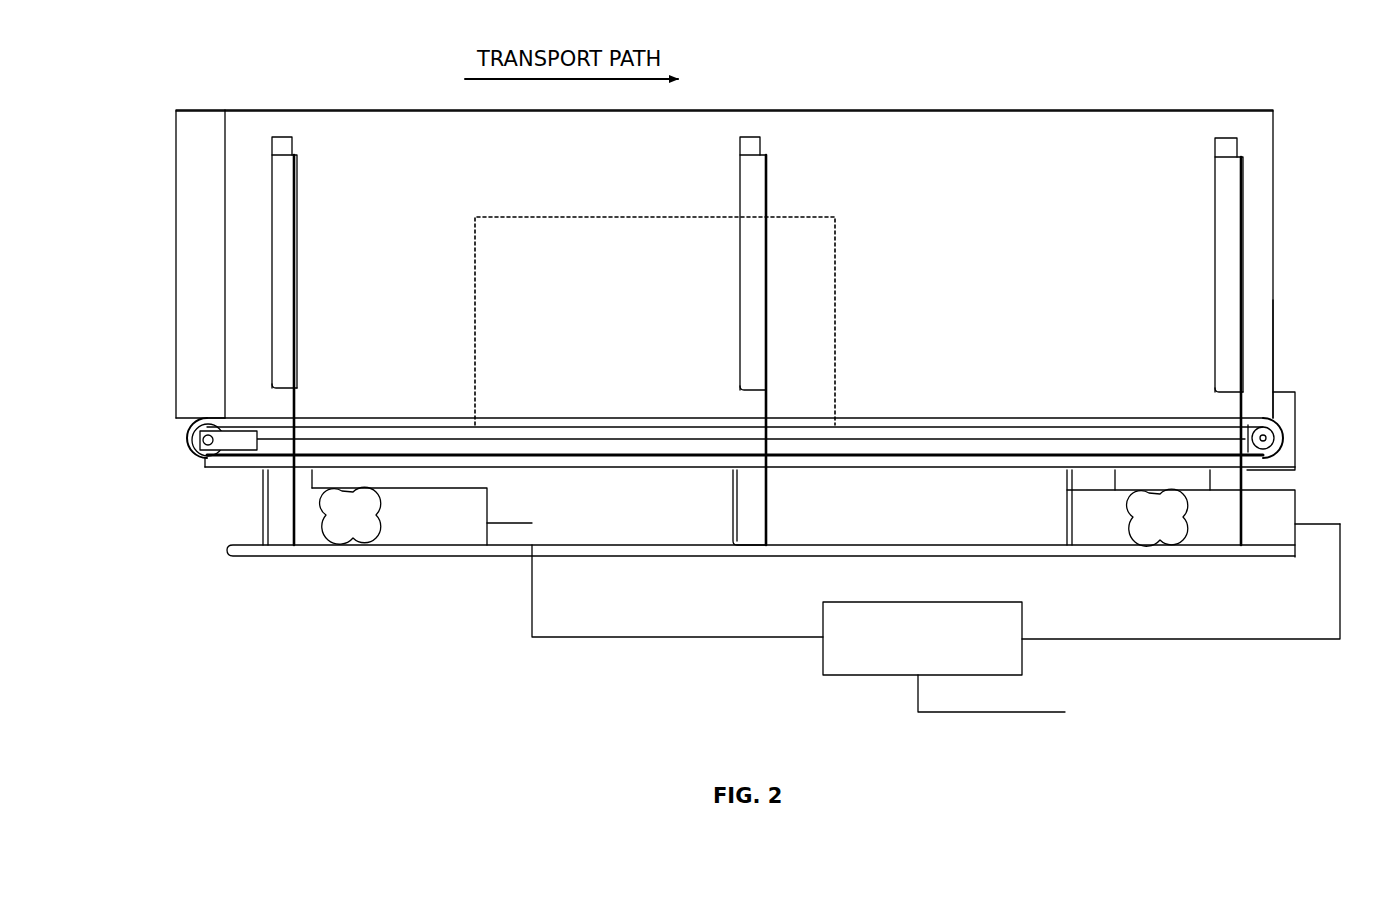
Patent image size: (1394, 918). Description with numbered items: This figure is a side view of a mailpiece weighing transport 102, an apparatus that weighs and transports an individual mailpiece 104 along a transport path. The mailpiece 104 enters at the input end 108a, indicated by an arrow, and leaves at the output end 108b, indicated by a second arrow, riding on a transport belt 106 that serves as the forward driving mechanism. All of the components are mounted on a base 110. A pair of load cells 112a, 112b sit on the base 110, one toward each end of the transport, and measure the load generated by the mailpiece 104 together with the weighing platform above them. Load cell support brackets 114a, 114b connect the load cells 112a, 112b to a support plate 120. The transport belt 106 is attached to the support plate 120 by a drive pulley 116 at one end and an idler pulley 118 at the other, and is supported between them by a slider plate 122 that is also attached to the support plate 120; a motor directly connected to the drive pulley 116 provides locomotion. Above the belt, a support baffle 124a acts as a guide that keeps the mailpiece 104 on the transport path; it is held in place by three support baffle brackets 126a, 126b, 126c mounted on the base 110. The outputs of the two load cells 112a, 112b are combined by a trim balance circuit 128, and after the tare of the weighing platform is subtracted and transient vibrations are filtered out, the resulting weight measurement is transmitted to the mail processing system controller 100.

The mail processing system controller 100 is at (1035, 712).
The mailpiece weighing transport 102 is at (353, 88).
The mailpiece 104 is at (655, 215).
The transport belt 106 is at (240, 462).
The input end 108a is at (158, 207).
The output end 108b is at (1297, 220).
The base 110 is at (683, 550).
The load cell 112a is at (1088, 512).
The load cell 112b is at (485, 501).
The load cell support bracket 114a is at (1072, 477).
The load cell support bracket 114b is at (276, 479).
The drive pulley 116 is at (1274, 438).
The idler pulley 118 is at (190, 450).
The support plate 120 is at (1292, 410).
The slider plate 122 is at (655, 415).
The support baffle 124a is at (1012, 128).
The support baffle bracket 126a is at (1225, 245).
The support baffle bracket 126b is at (755, 197).
The support baffle bracket 126c is at (292, 237).
The trim balance circuit 128 is at (1012, 608).